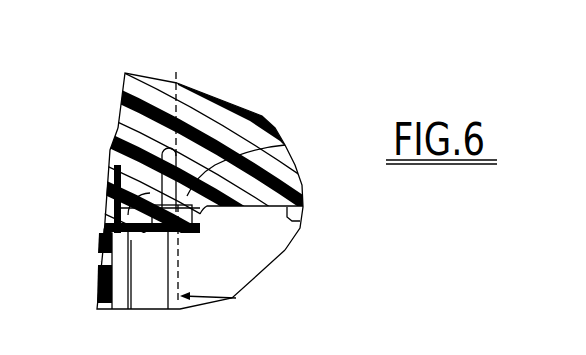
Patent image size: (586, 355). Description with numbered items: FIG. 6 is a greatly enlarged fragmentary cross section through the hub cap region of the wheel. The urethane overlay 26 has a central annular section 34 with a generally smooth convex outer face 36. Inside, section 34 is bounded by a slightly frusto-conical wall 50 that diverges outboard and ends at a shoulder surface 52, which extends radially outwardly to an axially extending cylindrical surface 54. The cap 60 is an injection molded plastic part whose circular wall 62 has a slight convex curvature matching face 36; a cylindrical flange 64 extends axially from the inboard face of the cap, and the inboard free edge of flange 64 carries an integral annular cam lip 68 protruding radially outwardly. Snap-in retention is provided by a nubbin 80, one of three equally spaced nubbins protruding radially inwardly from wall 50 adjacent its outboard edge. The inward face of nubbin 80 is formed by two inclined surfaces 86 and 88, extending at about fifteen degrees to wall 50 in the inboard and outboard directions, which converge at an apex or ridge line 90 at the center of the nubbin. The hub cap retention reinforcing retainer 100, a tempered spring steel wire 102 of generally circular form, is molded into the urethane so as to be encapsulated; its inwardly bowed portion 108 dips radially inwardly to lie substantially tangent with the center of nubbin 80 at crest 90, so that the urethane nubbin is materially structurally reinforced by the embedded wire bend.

The overlay 26 is at (122, 71).
The central annular section 34 is at (245, 112).
The convex outer face 36 is at (120, 86).
The frusto-conical wall 50 is at (302, 218).
The shoulder surface 52 is at (110, 190).
The cylindrical surface 54 is at (112, 167).
The cap 60 is at (96, 278).
The circular wall 62 is at (104, 243).
The cylindrical flange 64 is at (166, 240).
The annular cam lip 68 is at (220, 228).
The nubbin 80 is at (138, 270).
The inclined surface 86 is at (106, 208).
The inclined surface 88 is at (214, 207).
The apex or ridge line 90 is at (180, 236).
The hub cap retention reinforcing retainer 100 is at (236, 298).
The spring steel wire 102 is at (176, 82).
The inwardly bowed portion 108 is at (285, 145).